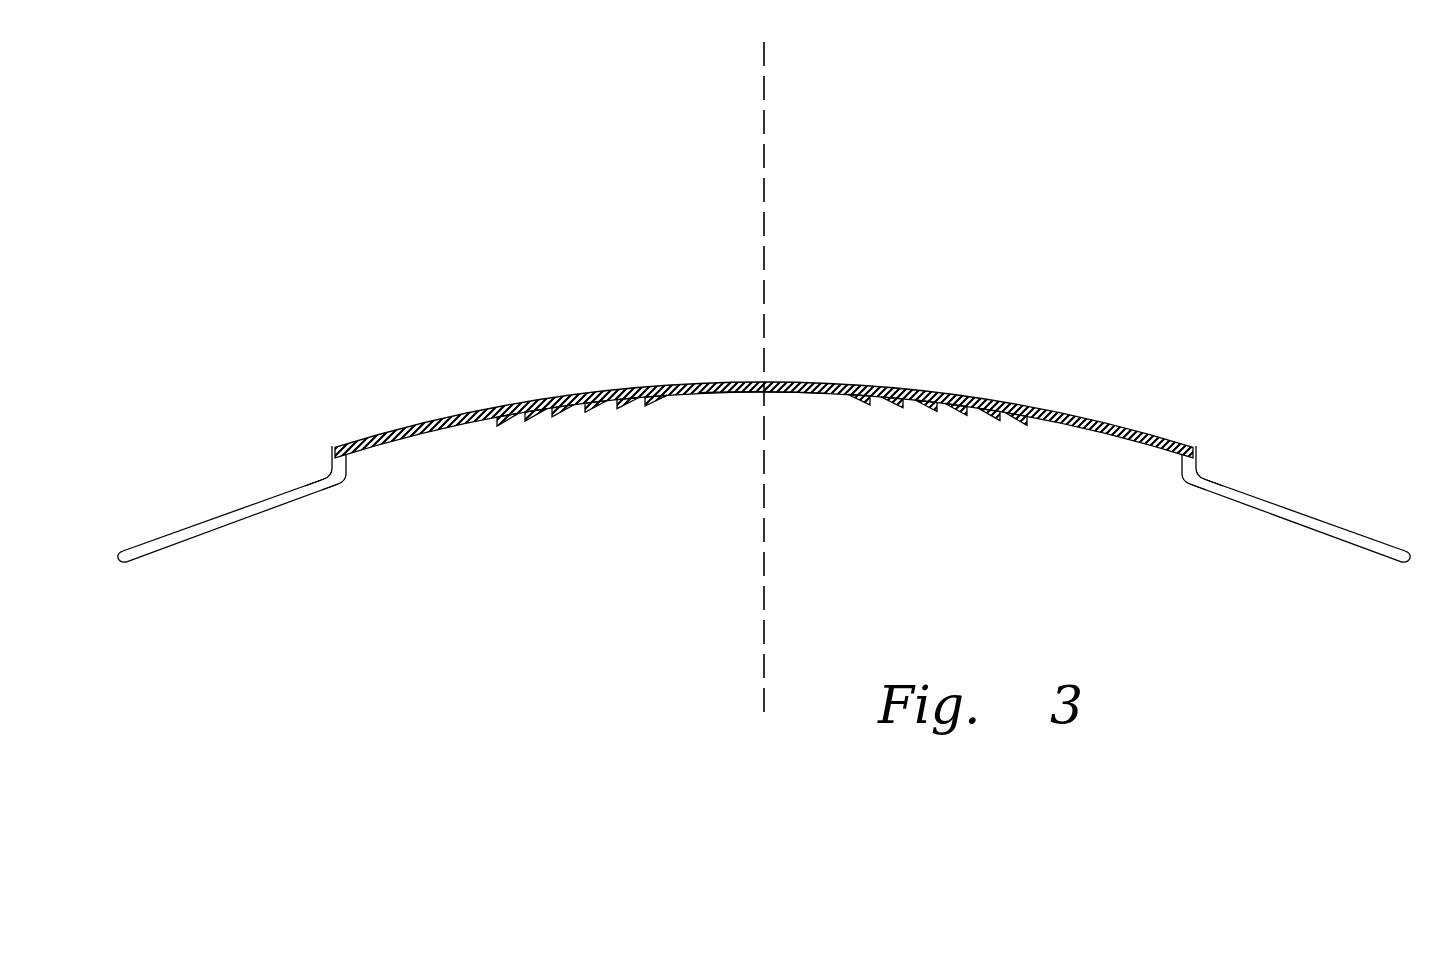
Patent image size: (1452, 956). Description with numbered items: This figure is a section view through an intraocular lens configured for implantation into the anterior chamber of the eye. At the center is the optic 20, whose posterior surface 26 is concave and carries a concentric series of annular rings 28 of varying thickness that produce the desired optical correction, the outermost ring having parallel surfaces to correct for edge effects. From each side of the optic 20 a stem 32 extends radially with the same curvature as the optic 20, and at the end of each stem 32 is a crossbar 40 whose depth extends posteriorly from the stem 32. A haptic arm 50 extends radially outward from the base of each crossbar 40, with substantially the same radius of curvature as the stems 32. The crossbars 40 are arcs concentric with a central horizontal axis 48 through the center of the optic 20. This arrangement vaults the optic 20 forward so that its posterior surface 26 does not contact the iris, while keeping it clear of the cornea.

The optic 20 is at (800, 382).
The posterior surface 26 is at (830, 394).
The annular rings 28 is at (633, 398).
The stem 32 is at (434, 417).
The crossbar 40 is at (332, 460).
The central horizontal axis 48 is at (764, 478).
The haptic arm 50 is at (272, 503).